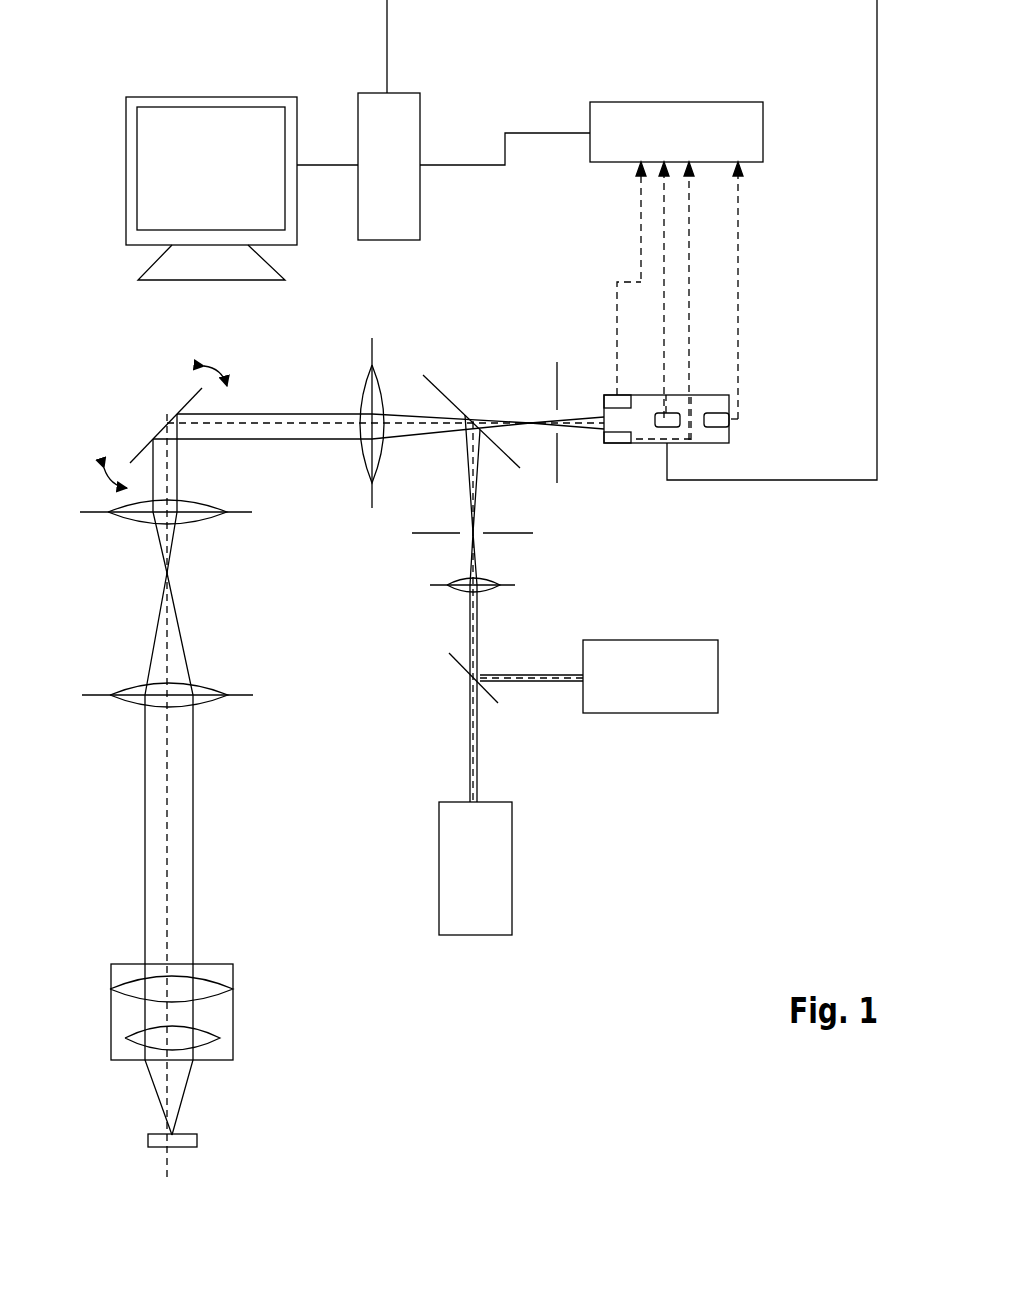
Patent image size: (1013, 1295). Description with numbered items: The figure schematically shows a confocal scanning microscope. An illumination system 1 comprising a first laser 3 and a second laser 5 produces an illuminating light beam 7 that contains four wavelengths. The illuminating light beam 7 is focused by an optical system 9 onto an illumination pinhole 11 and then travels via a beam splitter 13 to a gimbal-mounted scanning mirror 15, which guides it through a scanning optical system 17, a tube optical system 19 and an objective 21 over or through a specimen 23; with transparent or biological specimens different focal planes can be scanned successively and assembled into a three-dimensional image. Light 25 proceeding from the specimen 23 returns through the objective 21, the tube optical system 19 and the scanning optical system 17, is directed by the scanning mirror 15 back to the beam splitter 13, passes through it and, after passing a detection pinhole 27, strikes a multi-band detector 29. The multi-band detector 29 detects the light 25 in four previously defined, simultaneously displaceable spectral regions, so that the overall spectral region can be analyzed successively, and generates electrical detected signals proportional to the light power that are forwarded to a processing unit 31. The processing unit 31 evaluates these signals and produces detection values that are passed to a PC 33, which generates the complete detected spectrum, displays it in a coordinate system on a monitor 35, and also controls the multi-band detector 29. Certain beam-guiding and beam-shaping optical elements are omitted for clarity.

The illumination system 1 is at (600, 879).
The first laser 3 is at (458, 840).
The second laser 5 is at (617, 705).
The illuminating light beam 7 is at (470, 614).
The optical system 9 is at (487, 578).
The pinhole 11 is at (422, 535).
The beam splitter 13 is at (437, 385).
The scanning mirror 15 is at (142, 448).
The scanning optical system 17 is at (137, 512).
The tube optical system 19 is at (196, 700).
The objective 21 is at (208, 1012).
The specimen 23 is at (178, 1142).
The light proceeding from specimen 25 is at (492, 418).
The detection pinhole 27 is at (553, 388).
The multi-band detector 29 is at (757, 520).
The processing unit 31 is at (700, 117).
The PC 33 is at (373, 127).
The monitor 35 is at (220, 103).